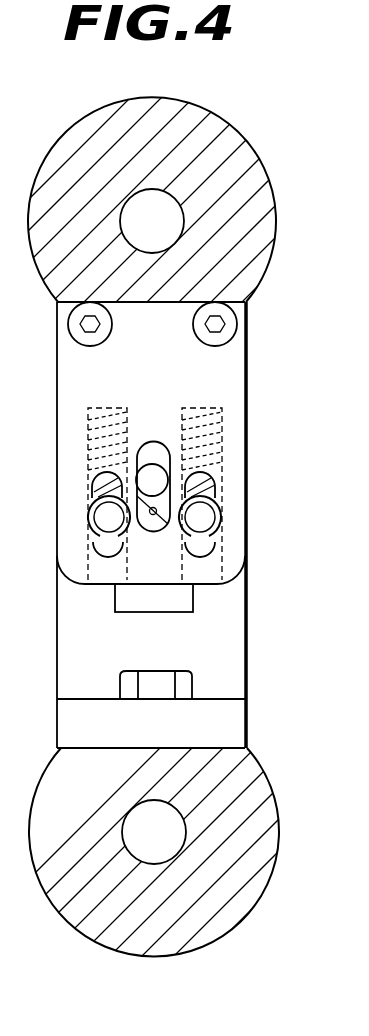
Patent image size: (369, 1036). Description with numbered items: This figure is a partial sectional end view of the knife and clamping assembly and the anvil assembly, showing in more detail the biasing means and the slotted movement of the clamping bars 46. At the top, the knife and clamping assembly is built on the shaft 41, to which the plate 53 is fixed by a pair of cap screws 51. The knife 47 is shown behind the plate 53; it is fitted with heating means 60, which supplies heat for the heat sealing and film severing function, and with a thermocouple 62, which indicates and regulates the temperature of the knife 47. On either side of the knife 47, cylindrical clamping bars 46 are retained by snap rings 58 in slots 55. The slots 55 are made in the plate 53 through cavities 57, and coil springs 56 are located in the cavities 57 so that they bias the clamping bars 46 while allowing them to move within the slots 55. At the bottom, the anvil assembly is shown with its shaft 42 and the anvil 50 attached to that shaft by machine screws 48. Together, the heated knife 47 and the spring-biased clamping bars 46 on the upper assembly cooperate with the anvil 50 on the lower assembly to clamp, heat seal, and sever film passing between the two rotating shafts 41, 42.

The shaft 41 is at (234, 138).
The shaft 42 is at (257, 772).
The clamping bars 46 is at (100, 517).
The knife 47 is at (152, 452).
The machine screws 48 is at (182, 685).
The anvil 50 is at (248, 677).
The cap screws 51 is at (68, 324).
The plate 53 is at (246, 358).
The slots 55 is at (207, 558).
The coil springs 56 is at (100, 442).
The cavities 57 is at (88, 427).
The snap rings 58 is at (90, 498).
The heating means 60 is at (160, 478).
The thermocouple 62 is at (153, 515).